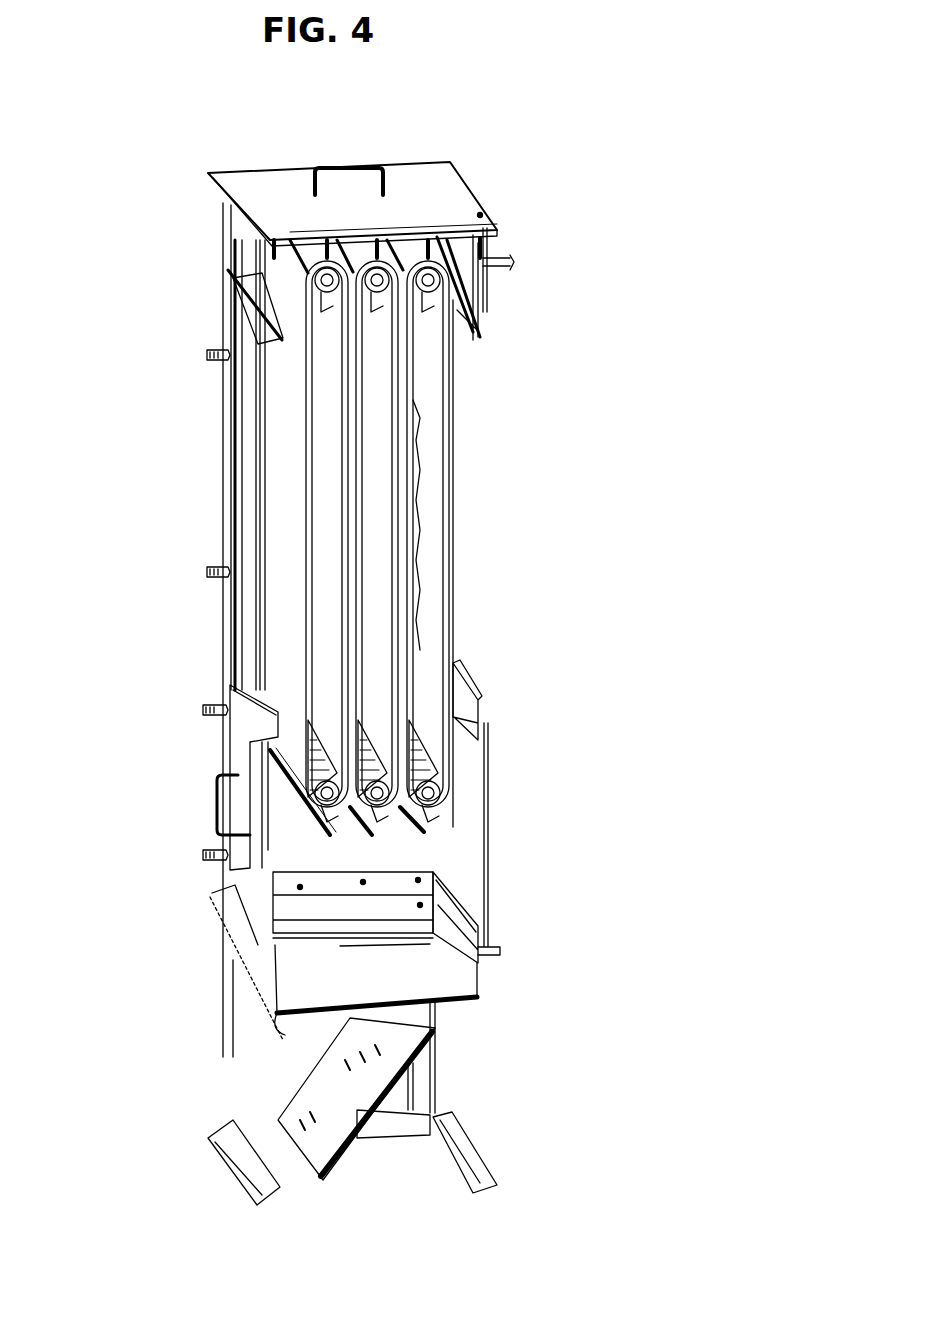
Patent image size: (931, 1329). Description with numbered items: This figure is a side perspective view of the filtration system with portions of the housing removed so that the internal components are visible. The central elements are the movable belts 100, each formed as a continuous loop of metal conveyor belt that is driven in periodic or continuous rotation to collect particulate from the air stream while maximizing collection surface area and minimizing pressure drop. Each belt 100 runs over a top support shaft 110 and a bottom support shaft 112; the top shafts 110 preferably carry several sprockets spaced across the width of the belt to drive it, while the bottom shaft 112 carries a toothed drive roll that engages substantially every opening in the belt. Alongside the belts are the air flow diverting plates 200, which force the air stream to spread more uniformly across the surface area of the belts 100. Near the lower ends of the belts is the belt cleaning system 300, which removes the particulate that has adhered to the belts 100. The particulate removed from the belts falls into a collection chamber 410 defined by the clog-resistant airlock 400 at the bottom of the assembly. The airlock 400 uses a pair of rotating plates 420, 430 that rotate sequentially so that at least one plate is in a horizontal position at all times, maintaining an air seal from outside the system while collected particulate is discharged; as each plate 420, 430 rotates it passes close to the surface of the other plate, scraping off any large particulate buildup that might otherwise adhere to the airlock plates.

The movable belt 100 is at (283, 448).
The top support shaft 110 is at (443, 260).
The bottom support shaft 112 is at (445, 800).
The air flow diverting plate 200 is at (428, 422).
The belt cleaning system 300 is at (447, 760).
The clog-resistant airlock 400 is at (447, 1025).
The collection chamber 410 is at (327, 860).
The rotating plate 420 is at (320, 990).
The rotating plate 430 is at (307, 1110).